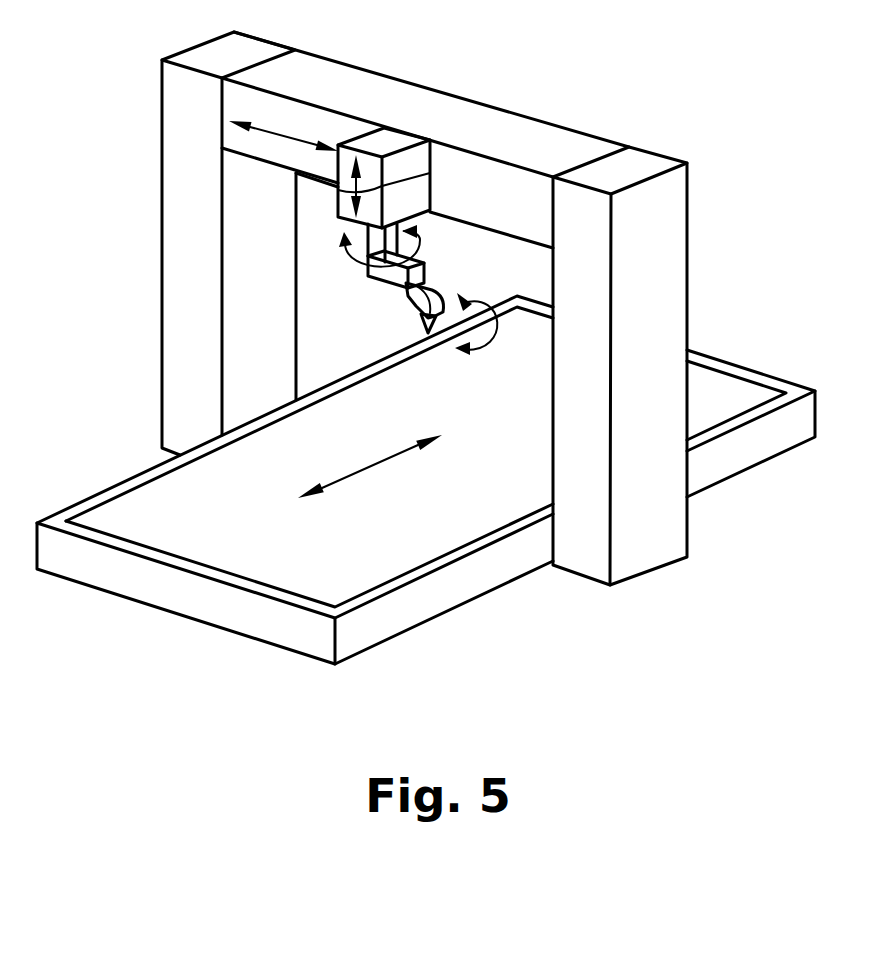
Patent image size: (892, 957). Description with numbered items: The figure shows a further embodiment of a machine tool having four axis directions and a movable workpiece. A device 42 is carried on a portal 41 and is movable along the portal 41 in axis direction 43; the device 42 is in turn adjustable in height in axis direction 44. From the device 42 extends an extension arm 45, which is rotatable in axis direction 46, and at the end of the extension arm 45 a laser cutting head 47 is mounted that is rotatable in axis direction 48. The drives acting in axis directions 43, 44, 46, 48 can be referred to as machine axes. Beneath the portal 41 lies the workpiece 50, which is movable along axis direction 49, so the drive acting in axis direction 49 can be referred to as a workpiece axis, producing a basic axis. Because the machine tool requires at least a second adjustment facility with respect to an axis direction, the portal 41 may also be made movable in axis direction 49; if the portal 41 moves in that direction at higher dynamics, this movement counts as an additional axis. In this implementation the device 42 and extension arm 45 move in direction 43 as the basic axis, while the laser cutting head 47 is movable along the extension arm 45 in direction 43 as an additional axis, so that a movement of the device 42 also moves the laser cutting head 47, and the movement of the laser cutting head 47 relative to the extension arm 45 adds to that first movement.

The portal 41 is at (517, 133).
The device 42 is at (368, 254).
The axis direction 43 is at (285, 132).
The axis direction 44 is at (430, 173).
The extension arm 45 is at (372, 277).
The axis direction 46 is at (388, 276).
The laser cutting head 47 is at (416, 310).
The axis direction 48 is at (488, 305).
The axis direction 49 is at (372, 468).
The workpiece 50 is at (372, 565).